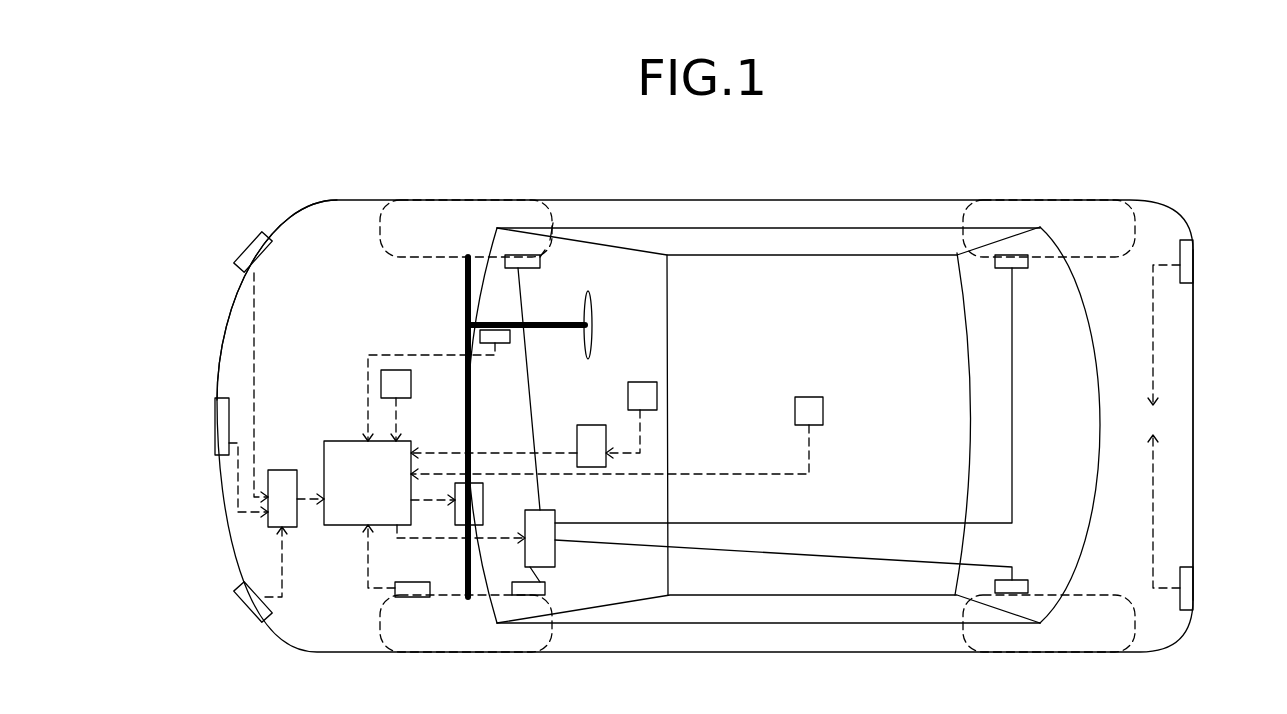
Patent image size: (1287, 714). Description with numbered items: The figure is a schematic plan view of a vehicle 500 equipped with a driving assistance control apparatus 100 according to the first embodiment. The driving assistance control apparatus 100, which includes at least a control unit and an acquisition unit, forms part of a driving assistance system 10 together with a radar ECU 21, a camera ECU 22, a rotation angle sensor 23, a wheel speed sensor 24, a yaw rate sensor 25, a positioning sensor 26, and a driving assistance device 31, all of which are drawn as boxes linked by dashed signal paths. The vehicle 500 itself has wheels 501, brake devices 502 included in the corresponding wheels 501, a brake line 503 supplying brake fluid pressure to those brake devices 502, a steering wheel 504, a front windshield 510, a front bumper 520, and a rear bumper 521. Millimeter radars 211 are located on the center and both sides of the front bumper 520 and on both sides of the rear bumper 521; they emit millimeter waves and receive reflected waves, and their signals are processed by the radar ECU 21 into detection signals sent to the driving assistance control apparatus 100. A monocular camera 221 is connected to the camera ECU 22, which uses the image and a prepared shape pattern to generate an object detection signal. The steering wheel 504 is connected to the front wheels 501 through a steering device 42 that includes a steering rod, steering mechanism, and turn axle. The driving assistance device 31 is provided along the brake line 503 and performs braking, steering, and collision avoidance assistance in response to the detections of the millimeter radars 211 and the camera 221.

The driving assistance system 10 is at (333, 615).
The radar ECU 21 is at (1173, 428).
The camera ECU 22 is at (508, 446).
The rotation angle sensor 23 is at (498, 336).
The wheel speed sensor 24 is at (405, 582).
The yaw rate sensor 25 is at (617, 438).
The positioning sensor 26 is at (396, 405).
The driving assistance device 31 is at (476, 525).
The steering device 42 is at (467, 330).
The driving assistance control apparatus 100 is at (367, 483).
The millimeter radar 211 is at (255, 243).
The monocular camera 221 is at (650, 397).
The vehicle 500 is at (783, 187).
The wheel 501 is at (443, 214).
The brake device 502 is at (518, 268).
The brake line 503 is at (532, 397).
The steering wheel 504 is at (593, 320).
The front windshield 510 is at (647, 353).
The front bumper 520 is at (228, 300).
The rear bumper 521 is at (1193, 410).